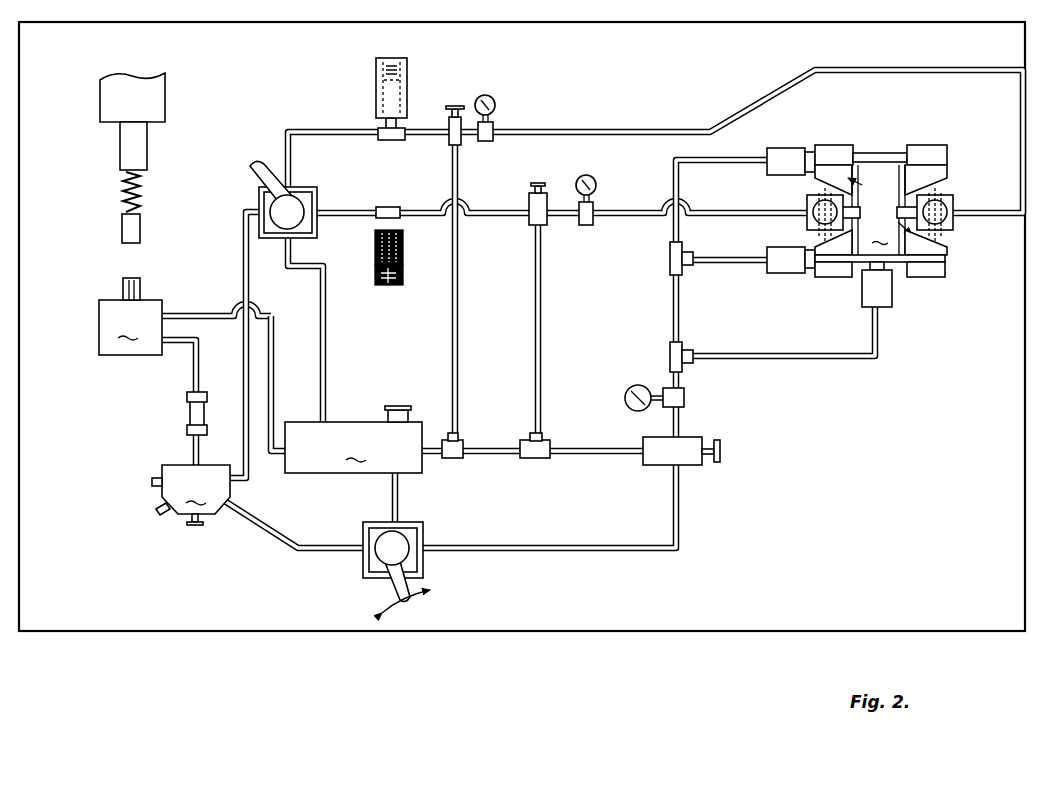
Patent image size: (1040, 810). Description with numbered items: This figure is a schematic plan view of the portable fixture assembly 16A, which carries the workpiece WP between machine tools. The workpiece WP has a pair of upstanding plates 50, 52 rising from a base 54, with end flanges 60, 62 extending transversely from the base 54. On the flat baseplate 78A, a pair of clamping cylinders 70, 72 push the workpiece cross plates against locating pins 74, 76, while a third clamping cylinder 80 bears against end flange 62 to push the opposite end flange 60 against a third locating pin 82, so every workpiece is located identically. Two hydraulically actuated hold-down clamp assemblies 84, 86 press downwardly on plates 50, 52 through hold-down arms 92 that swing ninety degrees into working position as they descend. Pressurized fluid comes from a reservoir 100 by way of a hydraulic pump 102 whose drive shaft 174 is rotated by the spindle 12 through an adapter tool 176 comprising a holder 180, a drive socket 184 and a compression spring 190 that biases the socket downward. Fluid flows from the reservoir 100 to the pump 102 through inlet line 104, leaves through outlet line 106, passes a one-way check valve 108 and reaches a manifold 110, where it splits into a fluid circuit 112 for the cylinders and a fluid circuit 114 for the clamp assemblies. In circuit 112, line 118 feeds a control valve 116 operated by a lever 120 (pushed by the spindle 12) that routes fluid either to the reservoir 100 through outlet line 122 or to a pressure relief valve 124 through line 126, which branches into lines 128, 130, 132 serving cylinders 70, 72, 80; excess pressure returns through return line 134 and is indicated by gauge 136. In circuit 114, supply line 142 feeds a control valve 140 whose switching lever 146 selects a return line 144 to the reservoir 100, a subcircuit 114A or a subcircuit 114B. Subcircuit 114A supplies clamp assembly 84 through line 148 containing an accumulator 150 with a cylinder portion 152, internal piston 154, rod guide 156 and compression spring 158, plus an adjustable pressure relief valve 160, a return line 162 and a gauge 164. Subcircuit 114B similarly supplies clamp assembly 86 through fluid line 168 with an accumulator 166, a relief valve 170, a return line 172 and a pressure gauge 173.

The spindle 12 is at (160, 90).
The fixture assembly 16A is at (252, 642).
The upstanding plate 50 is at (913, 146).
The upstanding plate 52 is at (860, 193).
The base 54 is at (889, 232).
The end flange 60 is at (926, 146).
The end flange 62 is at (944, 280).
The clamping cylinder 70 is at (783, 150).
The clamping cylinder 72 is at (802, 273).
The locating pin 74 is at (950, 162).
The locating pin 76 is at (948, 262).
The baseplate 78A is at (582, 636).
The third clamping cylinder 80 is at (892, 297).
The third locating pin 82 is at (878, 148).
The hold-down clamp assembly 84 is at (808, 200).
The hold-down clamp assembly 86 is at (956, 226).
The hold-down arm 92 is at (866, 206).
The reservoir 100 is at (353, 439).
The hydraulic pump 102 is at (130, 327).
The inlet line 104 is at (194, 316).
The outlet line 106 is at (194, 368).
The one-way check valve 108 is at (187, 410).
The manifold 110 is at (191, 495).
The fluid circuit 112 is at (534, 556).
The fluid circuit 114 is at (618, 85).
The subcircuit 114A is at (620, 233).
The subcircuit 114B is at (592, 100).
The control valve 116 is at (368, 523).
The line 118 is at (312, 556).
The lever 120 is at (416, 600).
The outlet line 122 is at (400, 498).
The pressure relief valve 124 is at (700, 442).
The line 126 is at (684, 549).
The line 128 is at (688, 168).
The line 130 is at (704, 266).
The line 132 is at (766, 362).
The return line 134 is at (562, 458).
The gauge 136 is at (633, 385).
The control valve 140 is at (318, 237).
The supply line 142 is at (246, 298).
The return line 144 is at (327, 374).
The switching lever 146 is at (272, 145).
The line 148 is at (478, 218).
The accumulator 150 is at (388, 288).
The cylinder portion 152 is at (374, 251).
The internal piston 154 is at (403, 258).
The rod guide 156 is at (403, 240).
The compression spring 158 is at (403, 280).
The pressure relief valve 160 is at (527, 206).
The return line 162 is at (541, 341).
The gauge 164 is at (594, 180).
The accumulator 166 is at (406, 64).
The fluid line 168 is at (608, 130).
The relief valve 170 is at (464, 148).
The return line 172 is at (458, 372).
The pressure gauge 173 is at (494, 99).
The drive shaft 174 is at (140, 290).
The adapter tool 176 is at (118, 206).
The holder 180 is at (142, 154).
The drive socket 184 is at (143, 230).
The compression spring 190 is at (144, 190).
The workpiece WP is at (832, 284).